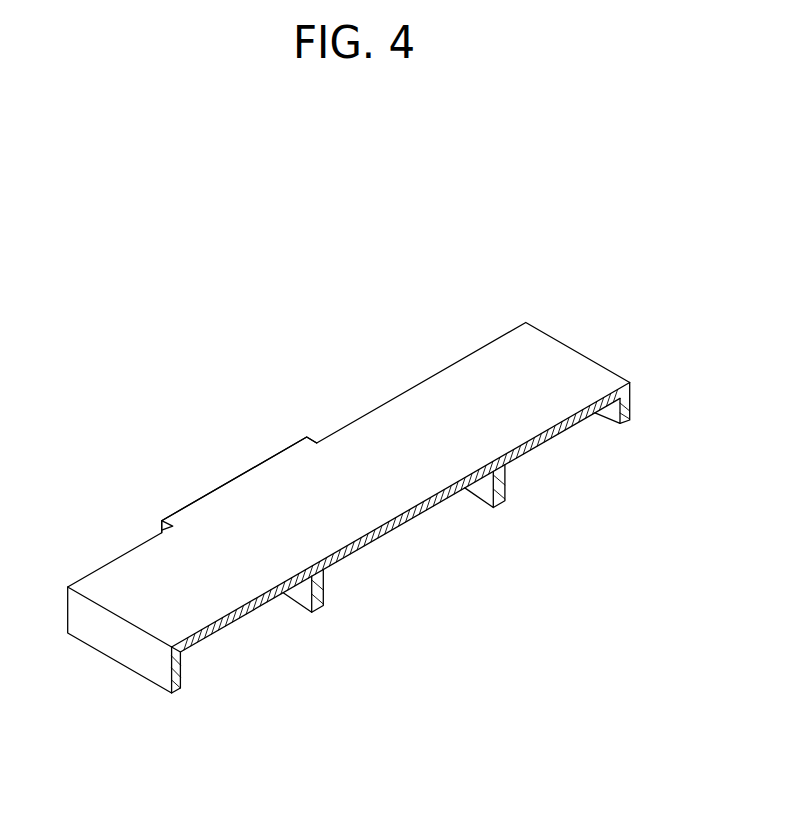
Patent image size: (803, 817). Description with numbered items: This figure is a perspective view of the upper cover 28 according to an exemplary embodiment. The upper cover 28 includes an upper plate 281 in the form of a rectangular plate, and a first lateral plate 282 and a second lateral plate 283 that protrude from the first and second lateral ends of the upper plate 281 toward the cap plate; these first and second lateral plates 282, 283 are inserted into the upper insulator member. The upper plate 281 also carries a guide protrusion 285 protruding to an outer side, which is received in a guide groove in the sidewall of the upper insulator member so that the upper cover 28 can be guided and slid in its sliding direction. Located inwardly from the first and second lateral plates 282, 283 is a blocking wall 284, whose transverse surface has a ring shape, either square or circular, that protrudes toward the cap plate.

The upper cover 28 is at (590, 334).
The upper plate 281 is at (453, 393).
The first lateral plate 282 is at (128, 652).
The second lateral plate 283 is at (613, 410).
The blocking wall 284 is at (303, 600).
The guide protrusion 285 is at (239, 473).